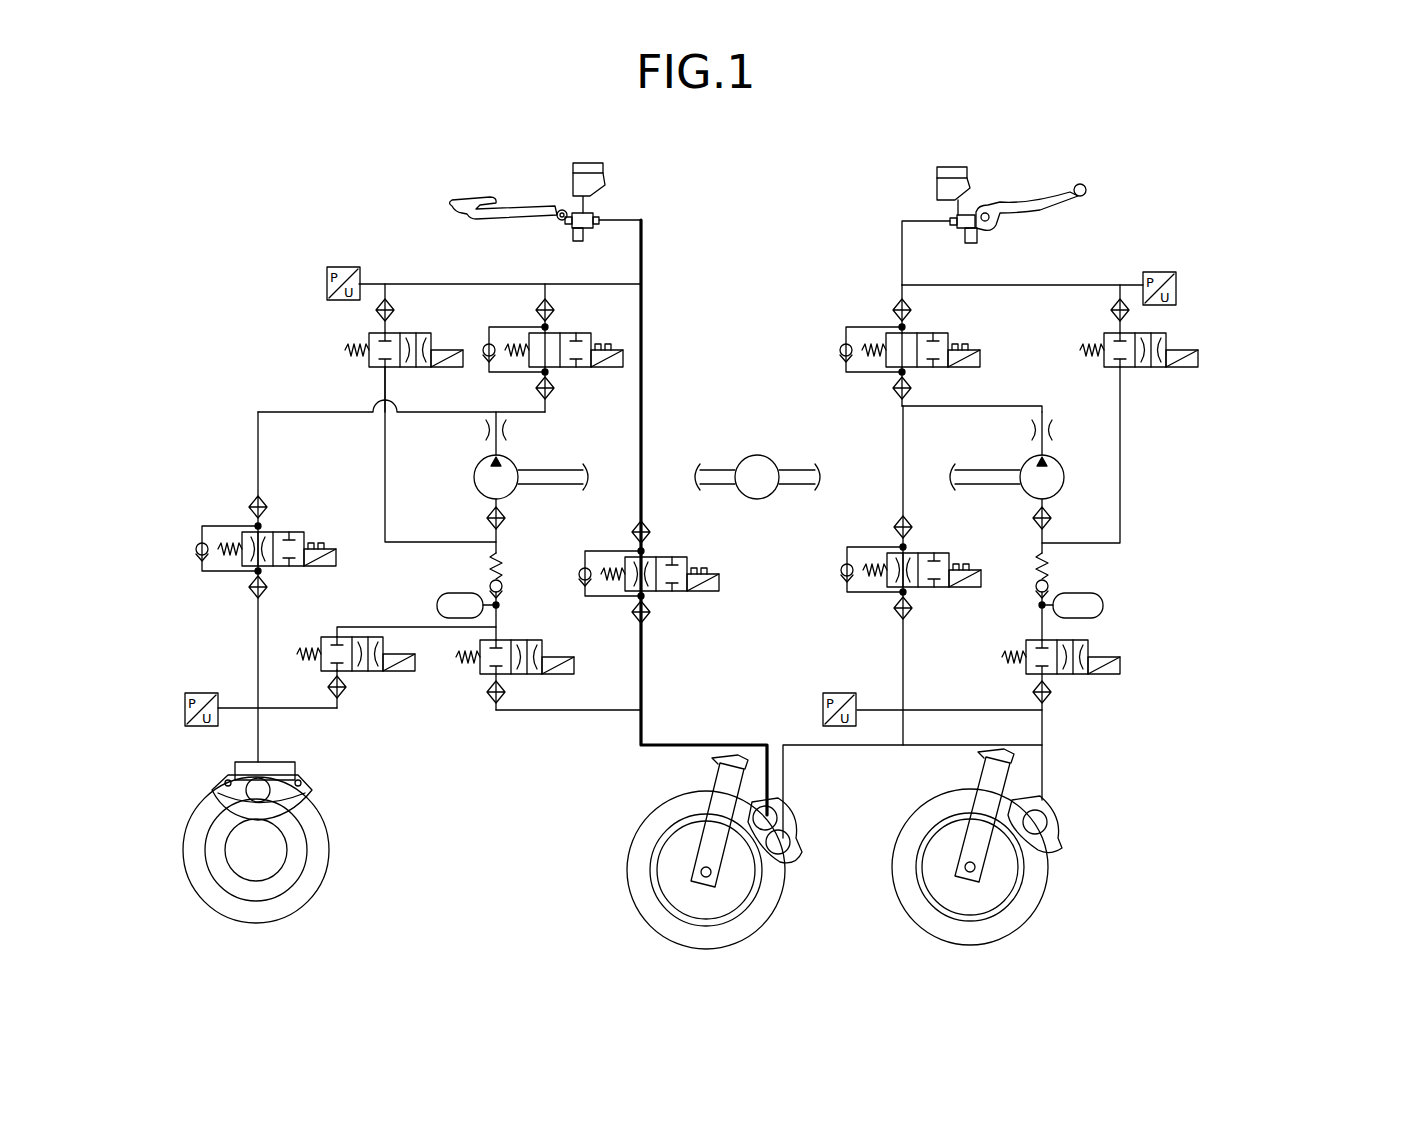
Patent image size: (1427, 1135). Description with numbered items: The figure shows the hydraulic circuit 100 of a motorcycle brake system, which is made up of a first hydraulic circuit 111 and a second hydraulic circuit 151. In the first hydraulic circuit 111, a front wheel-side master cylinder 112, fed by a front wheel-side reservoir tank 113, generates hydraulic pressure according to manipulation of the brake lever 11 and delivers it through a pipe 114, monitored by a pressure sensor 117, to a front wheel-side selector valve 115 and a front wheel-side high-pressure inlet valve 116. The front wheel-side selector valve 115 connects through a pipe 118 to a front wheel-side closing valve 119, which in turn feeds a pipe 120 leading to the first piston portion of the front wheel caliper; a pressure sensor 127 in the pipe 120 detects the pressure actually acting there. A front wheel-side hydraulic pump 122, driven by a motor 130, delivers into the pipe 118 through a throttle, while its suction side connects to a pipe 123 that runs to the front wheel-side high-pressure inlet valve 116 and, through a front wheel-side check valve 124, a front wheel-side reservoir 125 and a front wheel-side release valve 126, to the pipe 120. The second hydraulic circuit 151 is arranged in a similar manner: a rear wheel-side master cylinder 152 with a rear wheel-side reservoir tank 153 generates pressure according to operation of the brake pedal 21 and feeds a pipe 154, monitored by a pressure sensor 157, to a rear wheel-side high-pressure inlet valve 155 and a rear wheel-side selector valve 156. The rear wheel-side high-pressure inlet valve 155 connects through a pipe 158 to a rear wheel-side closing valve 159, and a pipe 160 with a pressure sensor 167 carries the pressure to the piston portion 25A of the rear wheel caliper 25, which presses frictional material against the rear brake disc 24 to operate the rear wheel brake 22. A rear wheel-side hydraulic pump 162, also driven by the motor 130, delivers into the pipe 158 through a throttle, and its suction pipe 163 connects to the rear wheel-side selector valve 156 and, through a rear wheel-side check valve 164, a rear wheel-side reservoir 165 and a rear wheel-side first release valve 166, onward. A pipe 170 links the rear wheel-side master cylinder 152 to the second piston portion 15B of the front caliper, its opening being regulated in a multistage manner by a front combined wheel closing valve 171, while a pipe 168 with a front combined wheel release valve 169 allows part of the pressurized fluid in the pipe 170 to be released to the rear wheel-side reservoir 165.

The hydraulic circuit 100 is at (1290, 210).
The brake lever 11 is at (1088, 190).
The second piston portion 15B is at (777, 815).
The brake pedal 21 is at (468, 200).
The rear wheel brake 22 is at (313, 825).
The rear brake disc 24 is at (330, 860).
The rear wheel caliper 25 is at (315, 800).
The piston portion 25A is at (275, 785).
The first hydraulic circuit 111 is at (1156, 228).
The front wheel-side master cylinder 112 is at (957, 218).
The front wheel-side reservoir tank 113 is at (950, 168).
The pipe 114 is at (902, 243).
The front wheel-side selector valve 115 is at (980, 350).
The front wheel-side high-pressure inlet valve 116 is at (1200, 352).
The pressure sensor 117 is at (1177, 285).
The pipe 118 is at (902, 406).
The front wheel-side closing valve 119 is at (945, 553).
The pipe 120 is at (903, 657).
The front wheel-side hydraulic pump 122 is at (1062, 468).
The pipe 123 is at (1120, 466).
The front wheel-side check valve 124 is at (1052, 570).
The front wheel-side reservoir 125 is at (1103, 605).
The front wheel-side release valve 126 is at (1122, 665).
The pressure sensor 127 is at (840, 693).
The motor 130 is at (757, 455).
The second hydraulic circuit 151 is at (252, 268).
The rear wheel-side master cylinder 152 is at (590, 215).
The rear wheel-side reservoir tank 153 is at (603, 168).
The pipe 154 is at (578, 282).
The rear wheel-side high-pressure inlet valve 155 is at (430, 348).
The rear wheel-side selector valve 156 is at (600, 335).
The pressure sensor 157 is at (345, 267).
The pipe 158 is at (300, 404).
The rear wheel-side closing valve 159 is at (300, 532).
The pipe 160 is at (257, 660).
The rear wheel-side hydraulic pump 162 is at (516, 466).
The pipe 163 is at (386, 478).
The rear wheel-side check valve 164 is at (505, 560).
The rear wheel-side reservoir 165 is at (437, 605).
The rear wheel-side first release valve 166 is at (336, 630).
The pressure sensor 167 is at (185, 695).
The pipe 168 is at (573, 712).
The front combined wheel release valve 169 is at (555, 672).
The pipe 170 is at (643, 378).
The front combined wheel closing valve 171 is at (688, 557).